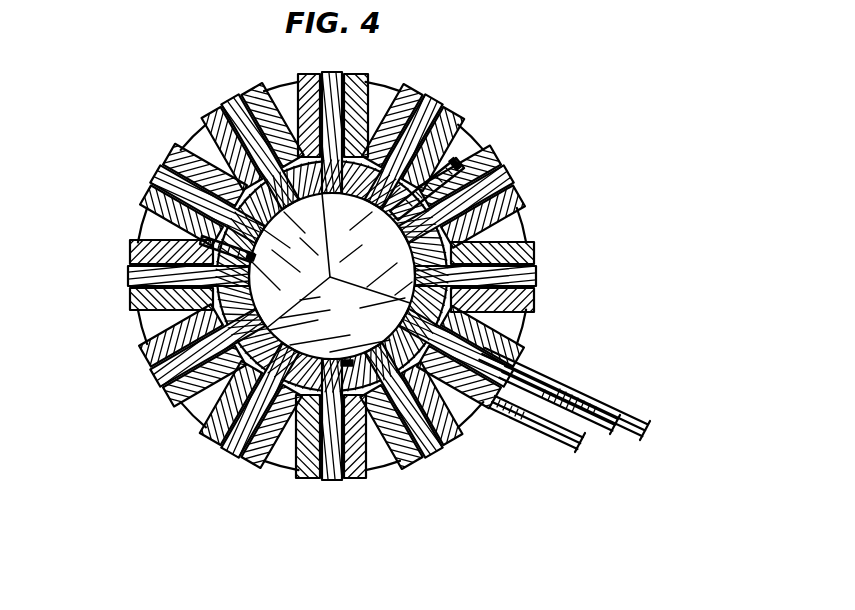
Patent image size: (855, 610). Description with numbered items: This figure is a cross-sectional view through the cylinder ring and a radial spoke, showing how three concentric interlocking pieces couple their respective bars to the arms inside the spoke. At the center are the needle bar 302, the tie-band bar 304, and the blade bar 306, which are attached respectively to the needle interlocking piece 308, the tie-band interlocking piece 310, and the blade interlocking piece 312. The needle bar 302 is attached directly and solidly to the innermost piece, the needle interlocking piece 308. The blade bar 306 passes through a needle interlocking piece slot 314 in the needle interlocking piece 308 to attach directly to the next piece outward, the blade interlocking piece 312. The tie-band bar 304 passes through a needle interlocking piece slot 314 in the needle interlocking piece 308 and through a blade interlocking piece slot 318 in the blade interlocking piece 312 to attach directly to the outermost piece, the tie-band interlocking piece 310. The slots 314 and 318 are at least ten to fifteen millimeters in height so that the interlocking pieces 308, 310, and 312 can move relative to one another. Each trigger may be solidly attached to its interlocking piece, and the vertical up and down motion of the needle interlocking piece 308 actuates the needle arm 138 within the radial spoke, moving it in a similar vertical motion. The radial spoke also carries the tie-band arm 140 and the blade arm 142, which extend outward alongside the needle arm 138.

The needle arm 138 is at (547, 362).
The tie-band arm 140 is at (578, 397).
The blade arm 142 is at (533, 432).
The needle bar 302 is at (360, 333).
The tie-band bar 304 is at (388, 261).
The blade bar 306 is at (307, 273).
The needle interlocking piece 308 is at (243, 330).
The tie-band interlocking piece 310 is at (152, 312).
The blade interlocking piece 312 is at (210, 378).
The needle interlocking piece slot 314 is at (240, 232).
The blade interlocking piece slot 318 is at (440, 187).